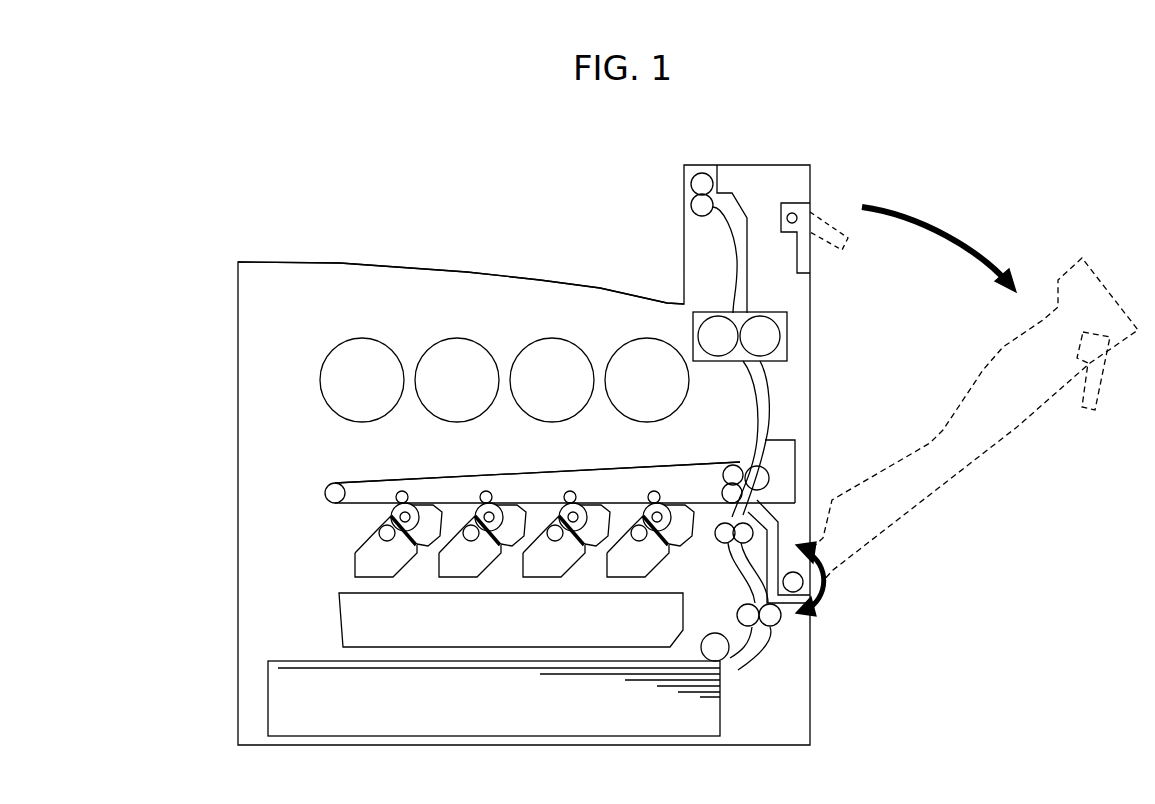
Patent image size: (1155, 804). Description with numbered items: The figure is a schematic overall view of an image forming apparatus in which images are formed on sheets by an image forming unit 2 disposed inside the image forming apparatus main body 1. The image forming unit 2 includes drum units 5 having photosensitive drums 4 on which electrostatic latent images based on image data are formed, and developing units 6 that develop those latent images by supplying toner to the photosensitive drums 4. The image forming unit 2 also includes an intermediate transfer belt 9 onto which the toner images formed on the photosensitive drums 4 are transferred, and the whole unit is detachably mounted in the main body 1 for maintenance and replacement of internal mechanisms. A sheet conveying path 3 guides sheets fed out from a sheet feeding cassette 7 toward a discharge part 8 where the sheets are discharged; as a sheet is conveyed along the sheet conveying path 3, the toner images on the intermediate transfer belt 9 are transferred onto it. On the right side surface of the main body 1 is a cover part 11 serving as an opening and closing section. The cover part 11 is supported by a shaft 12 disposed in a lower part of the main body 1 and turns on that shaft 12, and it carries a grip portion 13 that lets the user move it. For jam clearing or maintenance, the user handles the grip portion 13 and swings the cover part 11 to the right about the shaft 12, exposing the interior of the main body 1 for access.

The image forming apparatus main body 1 is at (215, 320).
The image forming unit 2 is at (318, 462).
The sheet conveying path 3 is at (762, 422).
The photosensitive drum 4 is at (382, 503).
The drum unit 5 is at (427, 522).
The developing unit 6 is at (392, 563).
The sheet feeding cassette 7 is at (703, 718).
The discharge part 8 is at (662, 302).
The intermediate transfer belt 9 is at (375, 488).
The cover part 11 is at (800, 345).
The shaft 12 is at (795, 582).
The grip portion 13 is at (805, 259).